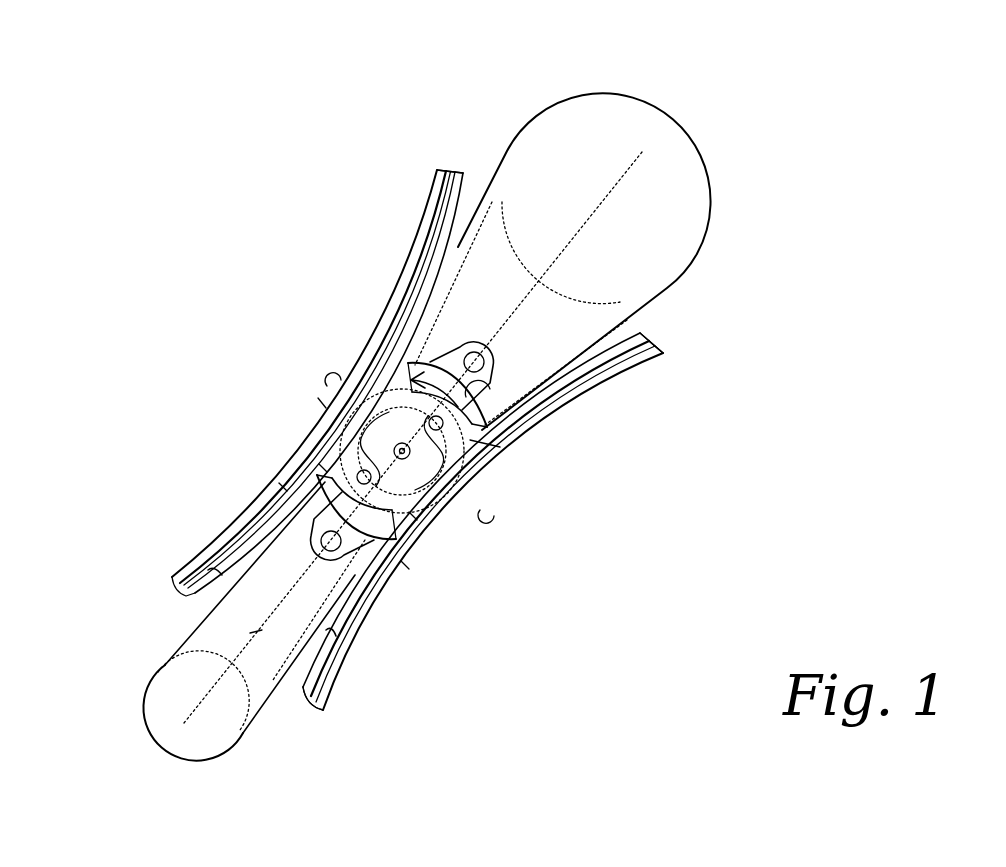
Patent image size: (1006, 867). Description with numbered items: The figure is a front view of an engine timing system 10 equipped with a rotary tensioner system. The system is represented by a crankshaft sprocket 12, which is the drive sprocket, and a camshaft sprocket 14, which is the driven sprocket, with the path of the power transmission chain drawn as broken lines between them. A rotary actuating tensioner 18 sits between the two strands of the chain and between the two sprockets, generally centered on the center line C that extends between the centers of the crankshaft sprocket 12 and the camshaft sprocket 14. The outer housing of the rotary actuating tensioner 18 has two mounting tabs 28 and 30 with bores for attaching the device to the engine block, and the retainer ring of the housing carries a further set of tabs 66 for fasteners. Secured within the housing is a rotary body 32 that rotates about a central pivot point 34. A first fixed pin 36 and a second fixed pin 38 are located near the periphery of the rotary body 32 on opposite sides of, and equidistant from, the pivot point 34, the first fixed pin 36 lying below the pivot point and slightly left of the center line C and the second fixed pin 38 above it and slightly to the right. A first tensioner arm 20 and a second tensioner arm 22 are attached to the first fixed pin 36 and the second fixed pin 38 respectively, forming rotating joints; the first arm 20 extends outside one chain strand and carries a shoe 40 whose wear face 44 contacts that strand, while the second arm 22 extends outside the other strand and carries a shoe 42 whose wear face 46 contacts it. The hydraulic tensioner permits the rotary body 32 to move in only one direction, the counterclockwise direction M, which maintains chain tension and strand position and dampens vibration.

The engine timing system 10 is at (168, 325).
The crankshaft sprocket 12 is at (222, 738).
The camshaft sprocket 14 is at (580, 168).
The rotary actuating tensioner 18 is at (427, 357).
The first tensioner arm 20 is at (466, 185).
The second tensioner arm 22 is at (305, 695).
The mounting tab 28 is at (474, 350).
The mounting tab 30 is at (318, 547).
The rotary body 32 is at (492, 440).
The central pivot point 34 is at (322, 404).
The first fixed pin 36 is at (371, 478).
The second fixed pin 38 is at (429, 423).
The shoe 40 is at (283, 487).
The shoe 42 is at (405, 565).
The wear face 44 is at (323, 468).
The wear face 46 is at (332, 636).
The tabs 66 is at (330, 378).
The center line C is at (250, 635).
The counter clockwise direction M is at (485, 380).